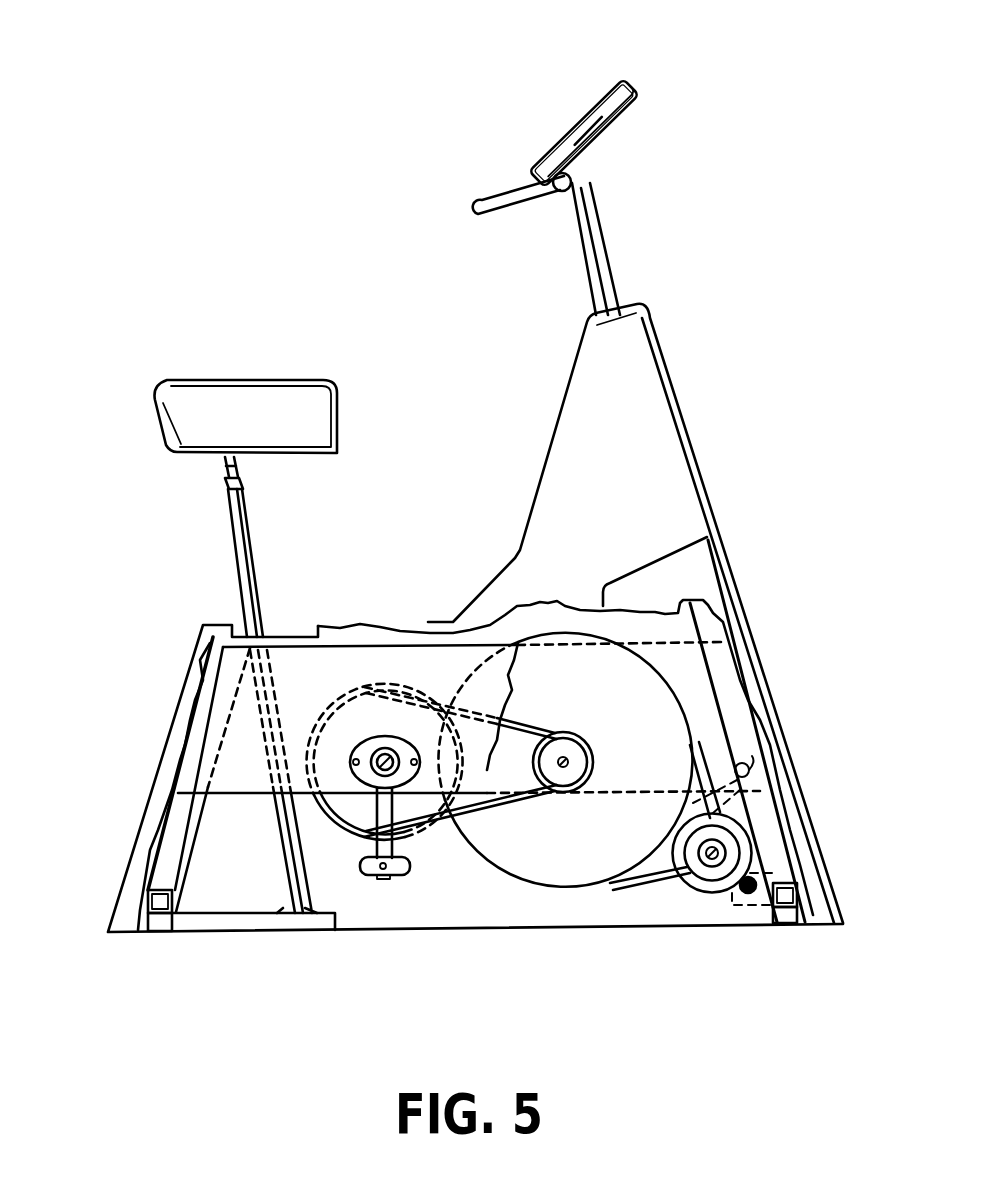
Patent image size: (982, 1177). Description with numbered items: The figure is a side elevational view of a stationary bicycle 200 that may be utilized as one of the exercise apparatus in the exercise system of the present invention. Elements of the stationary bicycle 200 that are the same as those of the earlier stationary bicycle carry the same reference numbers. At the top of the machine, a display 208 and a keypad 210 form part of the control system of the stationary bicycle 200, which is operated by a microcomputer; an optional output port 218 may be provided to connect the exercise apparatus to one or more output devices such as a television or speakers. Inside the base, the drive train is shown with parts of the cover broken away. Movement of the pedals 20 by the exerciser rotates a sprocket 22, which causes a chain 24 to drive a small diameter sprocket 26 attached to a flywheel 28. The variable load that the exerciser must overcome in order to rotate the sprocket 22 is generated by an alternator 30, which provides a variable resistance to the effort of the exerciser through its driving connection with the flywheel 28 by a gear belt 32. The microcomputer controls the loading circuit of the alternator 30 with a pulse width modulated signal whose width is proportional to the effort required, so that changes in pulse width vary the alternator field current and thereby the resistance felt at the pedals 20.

The stationary bicycle 200 is at (197, 247).
The display 208 is at (597, 100).
The keypad 210 is at (588, 94).
The optional output port 218 is at (593, 130).
The pedals 20 is at (363, 877).
The sprocket 22 is at (350, 727).
The chain 24 is at (430, 692).
The small diameter sprocket 26 is at (538, 748).
The flywheel 28 is at (620, 670).
The alternator 30 is at (712, 877).
The gear belt 32 is at (643, 878).